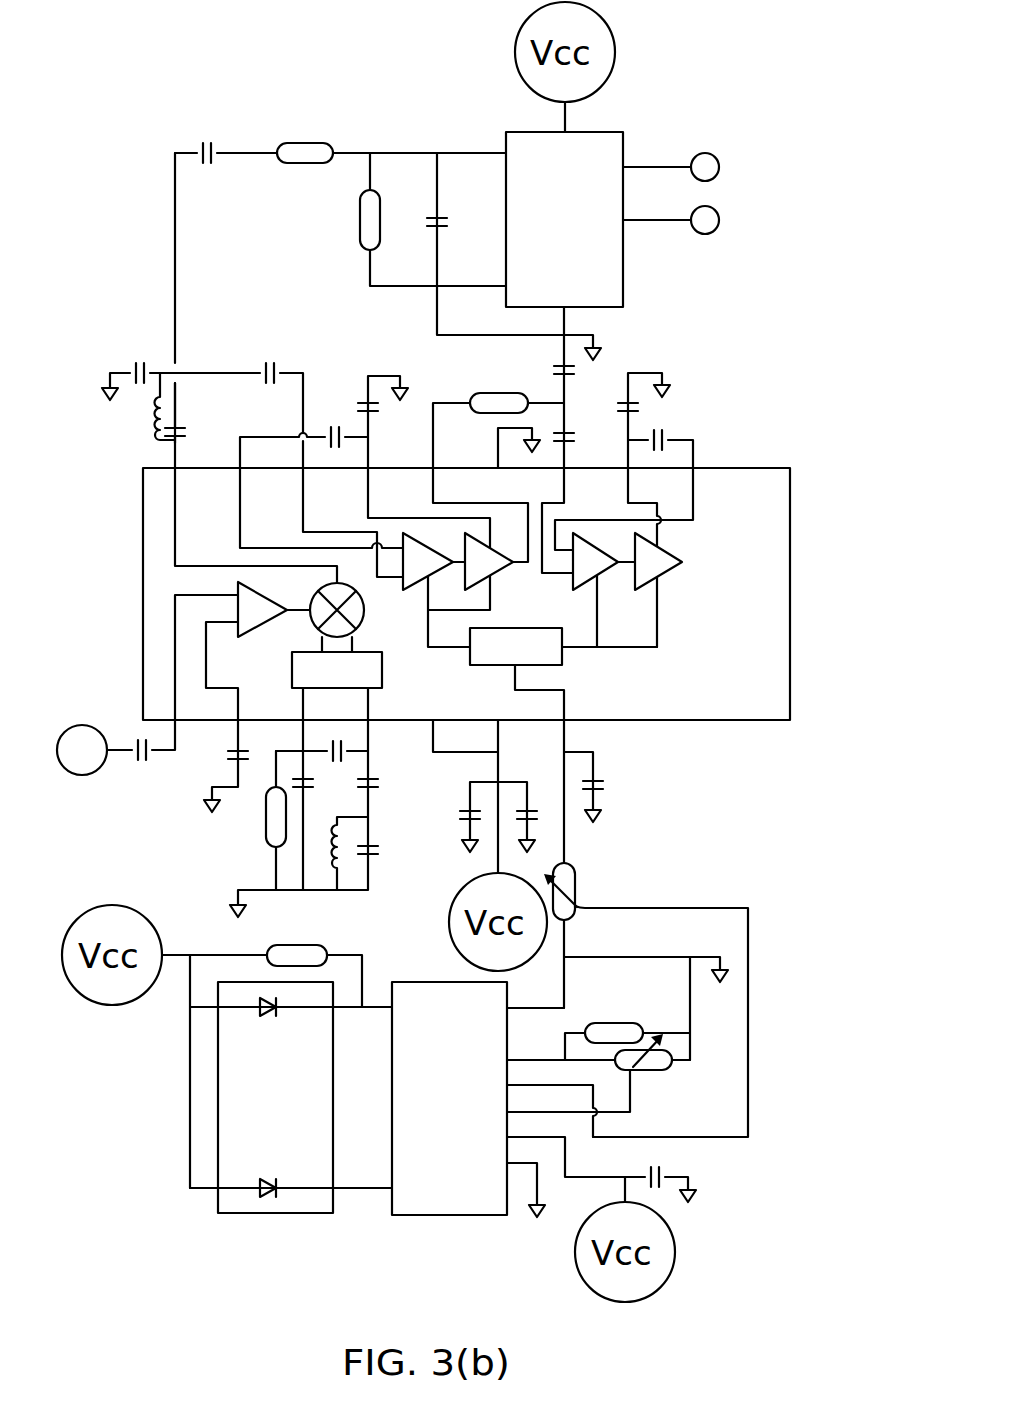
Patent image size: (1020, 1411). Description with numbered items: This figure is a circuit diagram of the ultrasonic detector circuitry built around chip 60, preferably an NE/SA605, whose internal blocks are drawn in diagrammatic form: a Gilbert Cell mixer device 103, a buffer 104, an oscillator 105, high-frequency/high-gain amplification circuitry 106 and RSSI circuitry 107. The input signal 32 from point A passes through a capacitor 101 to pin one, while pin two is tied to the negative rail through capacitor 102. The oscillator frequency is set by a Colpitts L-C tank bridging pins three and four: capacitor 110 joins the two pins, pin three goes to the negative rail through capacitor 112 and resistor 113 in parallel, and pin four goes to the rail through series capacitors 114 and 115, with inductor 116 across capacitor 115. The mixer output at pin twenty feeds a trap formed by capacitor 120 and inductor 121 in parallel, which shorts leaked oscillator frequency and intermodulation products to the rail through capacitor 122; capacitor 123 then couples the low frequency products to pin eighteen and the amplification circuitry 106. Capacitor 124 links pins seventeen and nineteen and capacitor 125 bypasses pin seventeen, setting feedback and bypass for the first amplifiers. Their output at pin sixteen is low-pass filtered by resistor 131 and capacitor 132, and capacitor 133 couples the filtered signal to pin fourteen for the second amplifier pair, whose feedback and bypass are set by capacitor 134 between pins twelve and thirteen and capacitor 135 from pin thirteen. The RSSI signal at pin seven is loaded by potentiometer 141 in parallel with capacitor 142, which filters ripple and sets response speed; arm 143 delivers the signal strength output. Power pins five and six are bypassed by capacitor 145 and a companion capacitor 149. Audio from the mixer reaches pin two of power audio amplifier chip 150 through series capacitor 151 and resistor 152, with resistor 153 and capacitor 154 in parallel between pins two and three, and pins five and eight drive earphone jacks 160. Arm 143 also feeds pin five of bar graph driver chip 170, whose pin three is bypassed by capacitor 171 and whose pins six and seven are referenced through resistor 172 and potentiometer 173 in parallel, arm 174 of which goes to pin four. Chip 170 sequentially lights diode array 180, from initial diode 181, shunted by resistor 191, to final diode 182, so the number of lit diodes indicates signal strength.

The input signal 32 is at (123, 744).
The chip 60 is at (748, 722).
The capacitor 101 is at (140, 767).
The capacitor 102 is at (232, 757).
The Gilbert Cell mixer device 103 is at (364, 612).
The buffer 104 is at (263, 624).
The oscillator 105 is at (383, 672).
The high-frequency/high-gain amplification circuitry 106 is at (590, 594).
The RSSI circuitry 107 is at (562, 663).
The capacitor 110 is at (342, 743).
The capacitor 112 is at (345, 785).
The resistor 113 is at (266, 830).
The capacitor 114 is at (380, 786).
The capacitor 115 is at (380, 853).
The inductor 116 is at (321, 868).
The capacitor 120 is at (183, 435).
The inductor 121 is at (153, 412).
The capacitor 122 is at (140, 363).
The capacitor 123 is at (270, 363).
The capacitor 124 is at (330, 430).
The capacitor 125 is at (380, 410).
The resistor 131 is at (476, 413).
The capacitor 132 is at (556, 371).
The capacitor 133 is at (598, 412).
The capacitor 134 is at (653, 443).
The capacitor 135 is at (638, 409).
The potentiometer 141 is at (576, 882).
The capacitor 142 is at (602, 790).
The arm 143 is at (648, 908).
The capacitor 145 is at (537, 808).
The capacitor 149 is at (462, 817).
The chip 150 is at (601, 136).
The capacitor 151 is at (203, 142).
The resistor 152 is at (306, 142).
The resistor 153 is at (358, 226).
The capacitor 154 is at (450, 226).
The earphone jacks 160 is at (714, 228).
The chip 170 is at (457, 990).
The capacitor 171 is at (662, 1167).
The resistor 172 is at (602, 1022).
The potentiometer 173 is at (672, 1070).
The arm 174 is at (636, 1090).
The diode array 180 is at (305, 1210).
The initial diode 181 is at (264, 1012).
The final diode 182 is at (268, 1200).
The resistor 191 is at (312, 944).